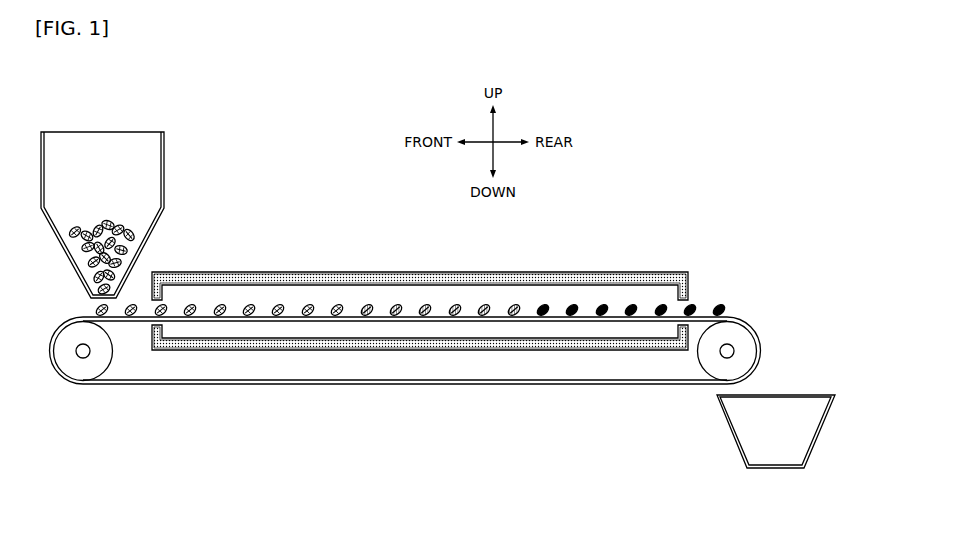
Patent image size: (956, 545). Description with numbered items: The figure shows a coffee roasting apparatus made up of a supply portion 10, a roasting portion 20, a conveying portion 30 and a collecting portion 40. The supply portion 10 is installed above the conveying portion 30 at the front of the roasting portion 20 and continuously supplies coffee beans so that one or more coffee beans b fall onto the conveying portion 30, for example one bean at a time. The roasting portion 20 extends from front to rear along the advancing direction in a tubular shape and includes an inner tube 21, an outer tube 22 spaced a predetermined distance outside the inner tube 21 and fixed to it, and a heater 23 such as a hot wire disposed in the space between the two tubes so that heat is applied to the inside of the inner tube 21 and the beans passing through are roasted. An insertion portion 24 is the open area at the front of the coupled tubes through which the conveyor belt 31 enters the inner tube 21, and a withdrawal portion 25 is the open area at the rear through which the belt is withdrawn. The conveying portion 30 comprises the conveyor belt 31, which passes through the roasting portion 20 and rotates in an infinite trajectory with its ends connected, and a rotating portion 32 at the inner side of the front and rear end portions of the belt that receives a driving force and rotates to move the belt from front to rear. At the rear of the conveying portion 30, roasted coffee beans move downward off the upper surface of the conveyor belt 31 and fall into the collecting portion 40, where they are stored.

The supply portion 10 is at (151, 124).
The roasting portion 20 is at (434, 279).
The inner tube 21 is at (420, 286).
The outer tube 22 is at (420, 259).
The heater 23 is at (538, 282).
The insertion portion 24 is at (148, 302).
The withdrawal portion 25 is at (692, 303).
The conveying portion 30 is at (404, 385).
The conveyor belt 31 is at (215, 384).
The rotating portion 32 is at (98, 366).
The coffee bean b is at (428, 313).
The collecting portion 40 is at (727, 451).